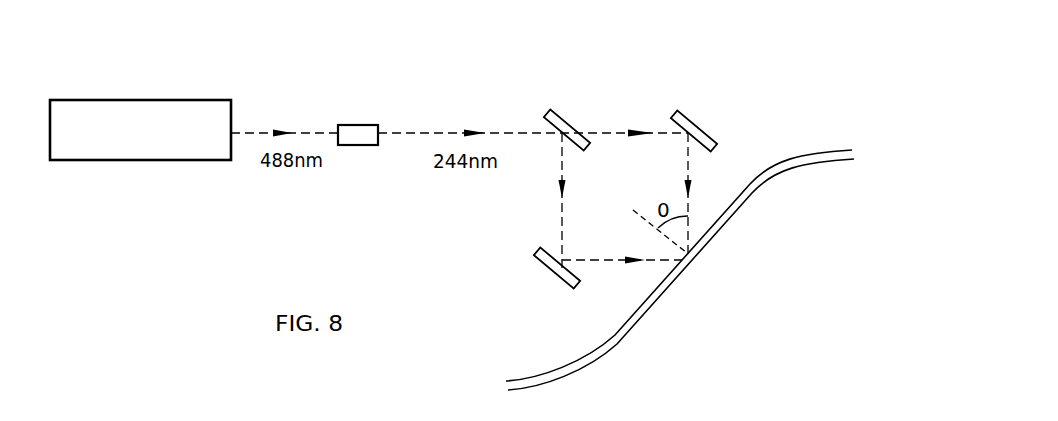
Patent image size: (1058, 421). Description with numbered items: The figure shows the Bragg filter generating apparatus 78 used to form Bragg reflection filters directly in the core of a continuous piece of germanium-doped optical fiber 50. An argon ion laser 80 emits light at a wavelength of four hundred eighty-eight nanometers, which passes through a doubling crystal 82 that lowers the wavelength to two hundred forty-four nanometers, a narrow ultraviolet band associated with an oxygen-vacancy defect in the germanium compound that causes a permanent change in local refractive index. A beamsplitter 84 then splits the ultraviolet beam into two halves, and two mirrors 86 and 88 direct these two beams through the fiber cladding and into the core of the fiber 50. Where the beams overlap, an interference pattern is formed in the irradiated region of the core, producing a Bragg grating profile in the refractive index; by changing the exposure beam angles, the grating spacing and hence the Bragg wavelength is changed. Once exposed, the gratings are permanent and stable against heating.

The optical fiber 50 is at (823, 149).
The Bragg filter generating apparatus 78 is at (360, 98).
The argon ion laser 80 is at (212, 100).
The doubling crystal 82 is at (362, 146).
The beamsplitter 84 is at (578, 121).
The mirror 86 is at (548, 276).
The mirror 88 is at (698, 117).